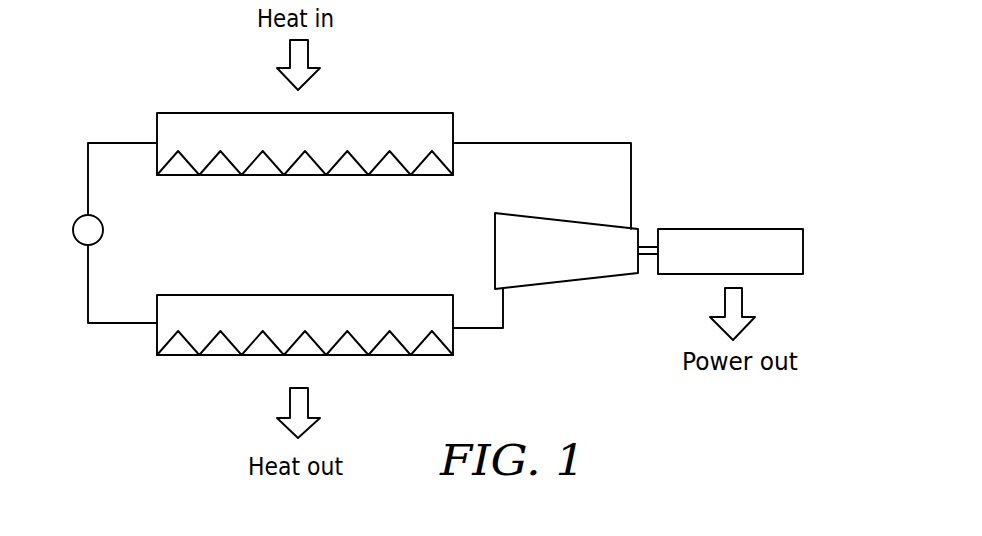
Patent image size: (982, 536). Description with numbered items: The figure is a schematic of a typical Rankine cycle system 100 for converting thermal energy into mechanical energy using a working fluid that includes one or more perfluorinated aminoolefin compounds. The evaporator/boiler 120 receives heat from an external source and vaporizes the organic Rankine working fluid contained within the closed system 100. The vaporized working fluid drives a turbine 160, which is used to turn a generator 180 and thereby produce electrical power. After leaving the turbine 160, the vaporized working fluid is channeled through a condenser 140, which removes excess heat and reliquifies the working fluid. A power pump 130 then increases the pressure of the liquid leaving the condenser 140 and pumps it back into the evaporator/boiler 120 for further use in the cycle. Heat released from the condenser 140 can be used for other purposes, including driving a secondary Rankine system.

The Rankine cycle system 100 is at (566, 50).
The evaporator/boiler 120 is at (194, 113).
The power pump 130 is at (93, 228).
The condenser 140 is at (184, 357).
The turbine 160 is at (569, 268).
The generator 180 is at (733, 242).